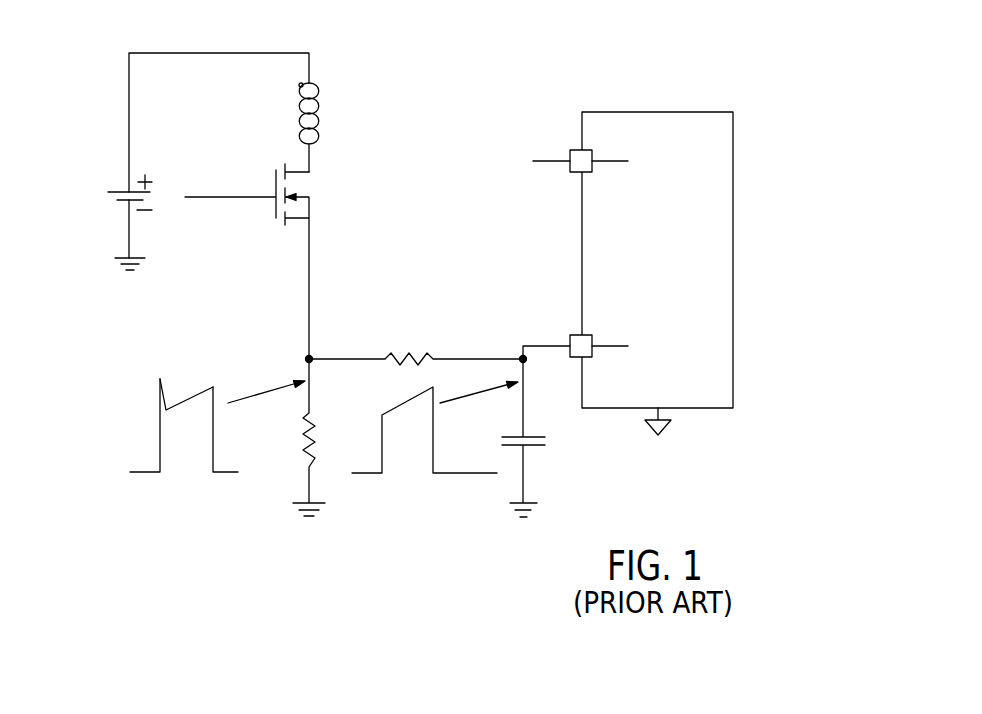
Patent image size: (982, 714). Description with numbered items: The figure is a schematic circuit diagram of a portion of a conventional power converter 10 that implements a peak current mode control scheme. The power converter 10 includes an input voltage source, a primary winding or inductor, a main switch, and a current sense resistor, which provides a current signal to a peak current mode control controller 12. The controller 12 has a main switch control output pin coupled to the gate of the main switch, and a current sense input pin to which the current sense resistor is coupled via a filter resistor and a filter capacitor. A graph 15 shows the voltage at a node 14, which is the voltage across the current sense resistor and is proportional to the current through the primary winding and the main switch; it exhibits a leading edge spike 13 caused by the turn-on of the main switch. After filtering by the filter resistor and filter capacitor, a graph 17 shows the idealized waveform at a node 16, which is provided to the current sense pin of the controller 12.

The power converter 10 is at (740, 29).
The peak current mode control controller 12 is at (733, 185).
The leading edge spike 13 is at (153, 366).
The node 14 is at (312, 358).
The graph 15 is at (184, 484).
The node 16 is at (521, 357).
The graph 17 is at (406, 481).